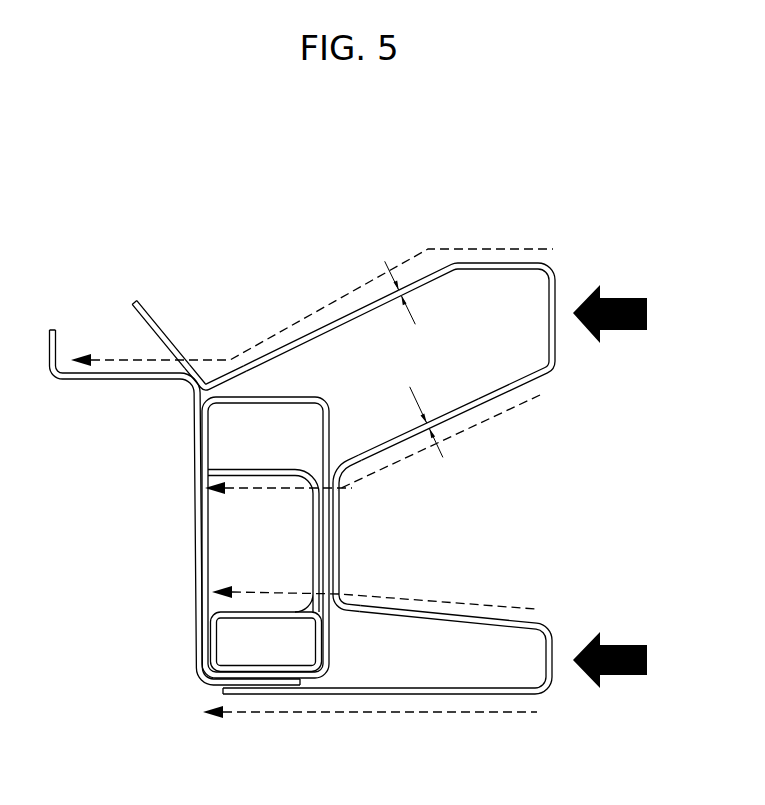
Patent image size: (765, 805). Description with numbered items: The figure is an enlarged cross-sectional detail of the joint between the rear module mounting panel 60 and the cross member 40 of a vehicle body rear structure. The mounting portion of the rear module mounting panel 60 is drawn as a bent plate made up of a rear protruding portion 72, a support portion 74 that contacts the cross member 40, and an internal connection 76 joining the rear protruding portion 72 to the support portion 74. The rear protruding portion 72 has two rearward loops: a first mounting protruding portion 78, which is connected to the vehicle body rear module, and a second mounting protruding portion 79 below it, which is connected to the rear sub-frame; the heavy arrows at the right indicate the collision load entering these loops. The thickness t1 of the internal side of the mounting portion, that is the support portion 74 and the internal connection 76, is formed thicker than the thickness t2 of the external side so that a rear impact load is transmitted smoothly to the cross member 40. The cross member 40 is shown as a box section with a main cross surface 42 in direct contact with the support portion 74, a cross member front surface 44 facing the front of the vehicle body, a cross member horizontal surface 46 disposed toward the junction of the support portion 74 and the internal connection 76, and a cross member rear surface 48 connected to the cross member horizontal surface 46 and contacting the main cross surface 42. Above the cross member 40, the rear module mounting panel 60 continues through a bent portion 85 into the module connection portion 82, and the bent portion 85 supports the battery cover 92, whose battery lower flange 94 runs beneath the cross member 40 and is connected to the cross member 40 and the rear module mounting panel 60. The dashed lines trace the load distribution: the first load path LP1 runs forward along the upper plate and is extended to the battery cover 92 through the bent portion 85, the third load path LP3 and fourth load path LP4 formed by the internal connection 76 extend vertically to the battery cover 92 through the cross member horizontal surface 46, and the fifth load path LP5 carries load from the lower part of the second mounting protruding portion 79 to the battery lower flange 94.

The cross member 40 is at (259, 585).
The main cross surface 42 is at (328, 652).
The cross member front surface 44 is at (207, 448).
The cross member horizontal surface 46 is at (263, 610).
The cross member rear surface 48 is at (310, 523).
The rear module mounting panel 60 is at (325, 285).
The rear protruding portion 72 is at (449, 486).
The support portion 74 is at (333, 535).
The internal connection 76 is at (474, 406).
The first mounting protruding portion 78 is at (557, 293).
The second mounting protruding portion 79 is at (548, 683).
The module connection portion 82 is at (147, 310).
The bent portion 85 is at (210, 388).
The battery cover 92 is at (107, 382).
The battery lower flange 94 is at (267, 686).
The first load path LP1 is at (492, 248).
The third load path LP3 is at (531, 401).
The fourth load path LP4 is at (503, 607).
The fifth load path LP5 is at (463, 716).
The thickness of the internal side of the mounting portion t1 is at (426, 419).
The thickness of the external side of the mounting portion t2 is at (409, 292).